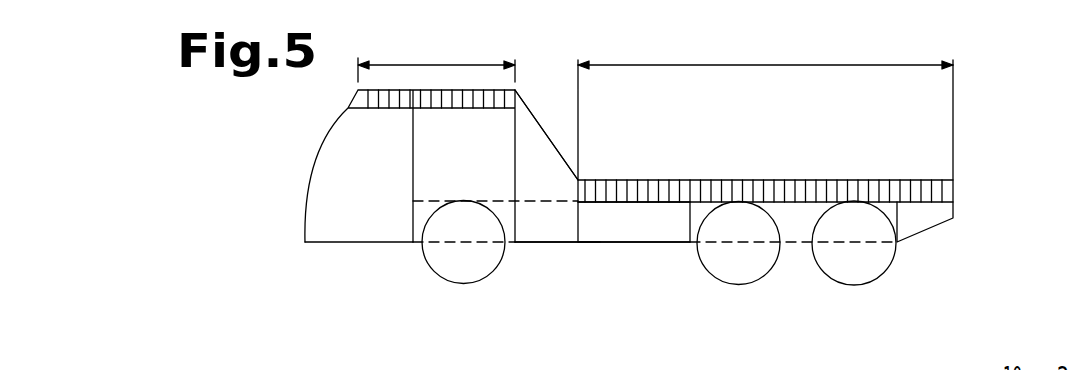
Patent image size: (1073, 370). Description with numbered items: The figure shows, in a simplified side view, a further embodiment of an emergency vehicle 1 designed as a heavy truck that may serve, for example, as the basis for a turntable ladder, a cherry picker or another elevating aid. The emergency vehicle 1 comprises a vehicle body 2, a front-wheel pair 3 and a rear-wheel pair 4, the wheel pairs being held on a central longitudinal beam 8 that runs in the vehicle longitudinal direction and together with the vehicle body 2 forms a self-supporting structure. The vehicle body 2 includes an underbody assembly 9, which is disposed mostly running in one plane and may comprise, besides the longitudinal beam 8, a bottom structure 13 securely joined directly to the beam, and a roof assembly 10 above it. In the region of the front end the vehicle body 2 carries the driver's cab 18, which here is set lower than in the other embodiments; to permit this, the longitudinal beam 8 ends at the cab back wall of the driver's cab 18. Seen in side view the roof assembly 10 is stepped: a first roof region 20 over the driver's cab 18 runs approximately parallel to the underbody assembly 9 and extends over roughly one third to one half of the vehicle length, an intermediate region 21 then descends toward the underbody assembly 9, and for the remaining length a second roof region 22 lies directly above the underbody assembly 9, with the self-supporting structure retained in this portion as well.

The emergency vehicle 1 is at (988, 120).
The vehicle body 2 is at (840, 156).
The front-wheel pair 3 is at (483, 263).
The rear-wheel pair 4 is at (730, 272).
The central longitudinal beam 8 is at (632, 230).
The underbody assembly 9 is at (561, 262).
The roof assembly 10 is at (404, 72).
The bottom structure 13 is at (596, 262).
The driver's cab 18 is at (306, 123).
The first roof region 20 is at (445, 53).
The intermediate region 21 is at (547, 102).
The second roof region 22 is at (685, 53).